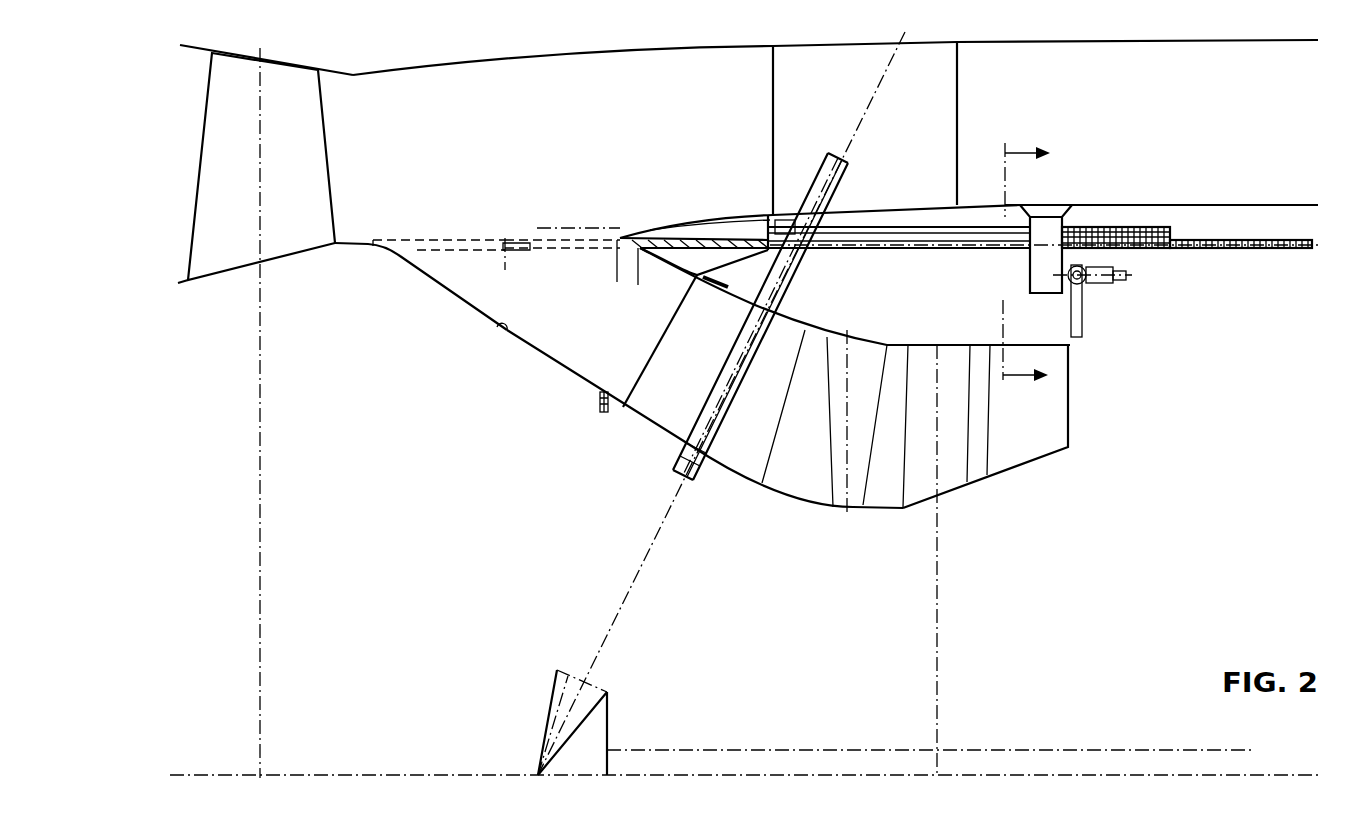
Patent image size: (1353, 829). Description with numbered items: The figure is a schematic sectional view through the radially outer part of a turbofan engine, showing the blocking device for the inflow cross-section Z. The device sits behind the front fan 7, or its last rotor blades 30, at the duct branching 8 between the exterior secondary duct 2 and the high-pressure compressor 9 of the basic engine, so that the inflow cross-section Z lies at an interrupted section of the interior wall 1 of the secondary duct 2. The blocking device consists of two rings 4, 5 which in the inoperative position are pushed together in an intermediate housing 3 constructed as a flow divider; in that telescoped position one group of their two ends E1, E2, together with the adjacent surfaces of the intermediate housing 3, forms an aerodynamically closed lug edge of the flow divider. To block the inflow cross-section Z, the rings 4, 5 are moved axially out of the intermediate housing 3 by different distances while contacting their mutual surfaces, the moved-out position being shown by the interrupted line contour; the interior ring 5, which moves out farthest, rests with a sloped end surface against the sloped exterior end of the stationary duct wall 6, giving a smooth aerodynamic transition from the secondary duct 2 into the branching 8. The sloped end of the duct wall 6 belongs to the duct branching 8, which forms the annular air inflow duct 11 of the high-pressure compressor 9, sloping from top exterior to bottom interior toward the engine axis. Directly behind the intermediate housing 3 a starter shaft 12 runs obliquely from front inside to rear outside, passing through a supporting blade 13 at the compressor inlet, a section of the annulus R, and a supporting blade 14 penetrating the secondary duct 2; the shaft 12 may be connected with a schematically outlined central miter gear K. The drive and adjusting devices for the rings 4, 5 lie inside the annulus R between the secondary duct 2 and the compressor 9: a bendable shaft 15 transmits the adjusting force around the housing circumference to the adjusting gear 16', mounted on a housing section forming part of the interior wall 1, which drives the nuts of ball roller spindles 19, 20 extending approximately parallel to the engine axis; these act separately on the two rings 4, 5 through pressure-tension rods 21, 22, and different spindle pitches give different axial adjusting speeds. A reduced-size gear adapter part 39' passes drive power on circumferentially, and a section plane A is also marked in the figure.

The interior wall 1 is at (1095, 205).
The secondary duct 2 is at (656, 95).
The intermediate housing 3 is at (755, 216).
The ring 4 is at (565, 232).
The interior ring 5 is at (428, 243).
The stationary duct wall 6 is at (506, 334).
The front fan 7 is at (148, 197).
The duct branching 8 is at (455, 272).
The high-pressure compressor 9 is at (818, 477).
The annular air inflow duct 11 is at (614, 358).
The starter shaft 12 is at (725, 415).
The supporting blade 13 is at (668, 398).
The supporting blade 14 is at (812, 92).
The bendable shaft 15 is at (1046, 300).
The adjusting gear 16' is at (1080, 289).
The ball roller spindle 19 is at (1125, 227).
The ball roller spindle 20 is at (1306, 252).
The pressure-tension rod 21 is at (858, 226).
The pressure-tension rod 22 is at (950, 250).
The rotor blades 30 is at (215, 137).
The gear adapter part 39' is at (1190, 267).
The section line A- A is at (1035, 275).
The end E1 is at (626, 236).
The end E2 is at (618, 250).
The central miter gear K is at (569, 748).
The annulus R is at (882, 316).
The inflow cross-section Z is at (492, 262).